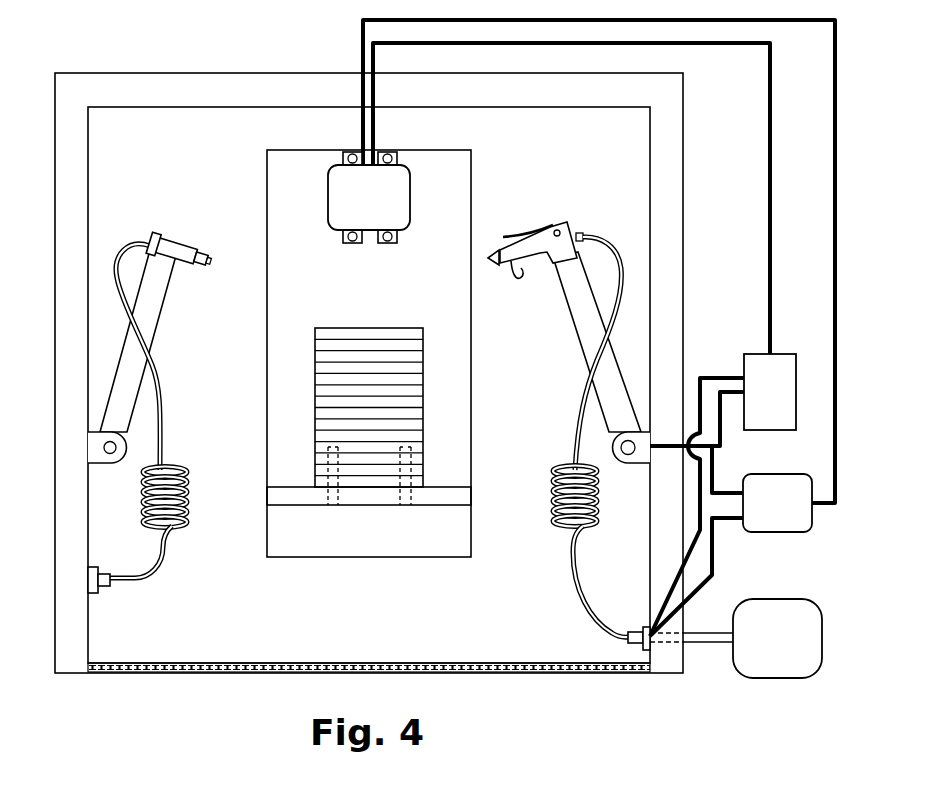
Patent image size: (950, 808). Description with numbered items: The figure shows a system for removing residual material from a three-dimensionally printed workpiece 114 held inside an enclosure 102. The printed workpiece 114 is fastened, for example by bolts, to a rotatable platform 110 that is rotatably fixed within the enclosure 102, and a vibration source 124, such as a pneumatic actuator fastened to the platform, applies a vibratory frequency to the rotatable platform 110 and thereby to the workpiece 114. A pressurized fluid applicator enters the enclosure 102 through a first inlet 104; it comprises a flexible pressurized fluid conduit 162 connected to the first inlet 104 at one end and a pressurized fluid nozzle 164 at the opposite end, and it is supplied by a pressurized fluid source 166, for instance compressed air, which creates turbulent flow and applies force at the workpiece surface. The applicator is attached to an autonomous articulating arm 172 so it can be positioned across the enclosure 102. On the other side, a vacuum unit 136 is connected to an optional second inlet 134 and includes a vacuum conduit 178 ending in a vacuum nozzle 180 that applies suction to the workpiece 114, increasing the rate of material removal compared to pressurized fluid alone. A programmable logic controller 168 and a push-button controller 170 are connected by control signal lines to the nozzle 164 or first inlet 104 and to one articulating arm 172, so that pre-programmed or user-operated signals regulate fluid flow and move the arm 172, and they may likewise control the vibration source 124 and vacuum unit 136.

The enclosure 102 is at (204, 73).
The first inlet 104 is at (641, 648).
The rotatable platform 110 is at (458, 486).
The 3D printed workpiece 114 is at (367, 328).
The vibration source 124 is at (390, 200).
The second inlet 134 is at (90, 577).
The vacuum unit 136 is at (118, 262).
The pressurized fluid conduit 162 is at (626, 266).
The pressurized fluid nozzle 164 is at (536, 232).
The pressurized fluid source 166 is at (758, 652).
The programmable logic controller (PLC) 168 is at (758, 515).
The push-button controller 170 is at (751, 403).
The autonomous articulating arm 172 is at (160, 300).
The vacuum conduit 178 is at (147, 350).
The vacuum nozzle 180 is at (183, 248).